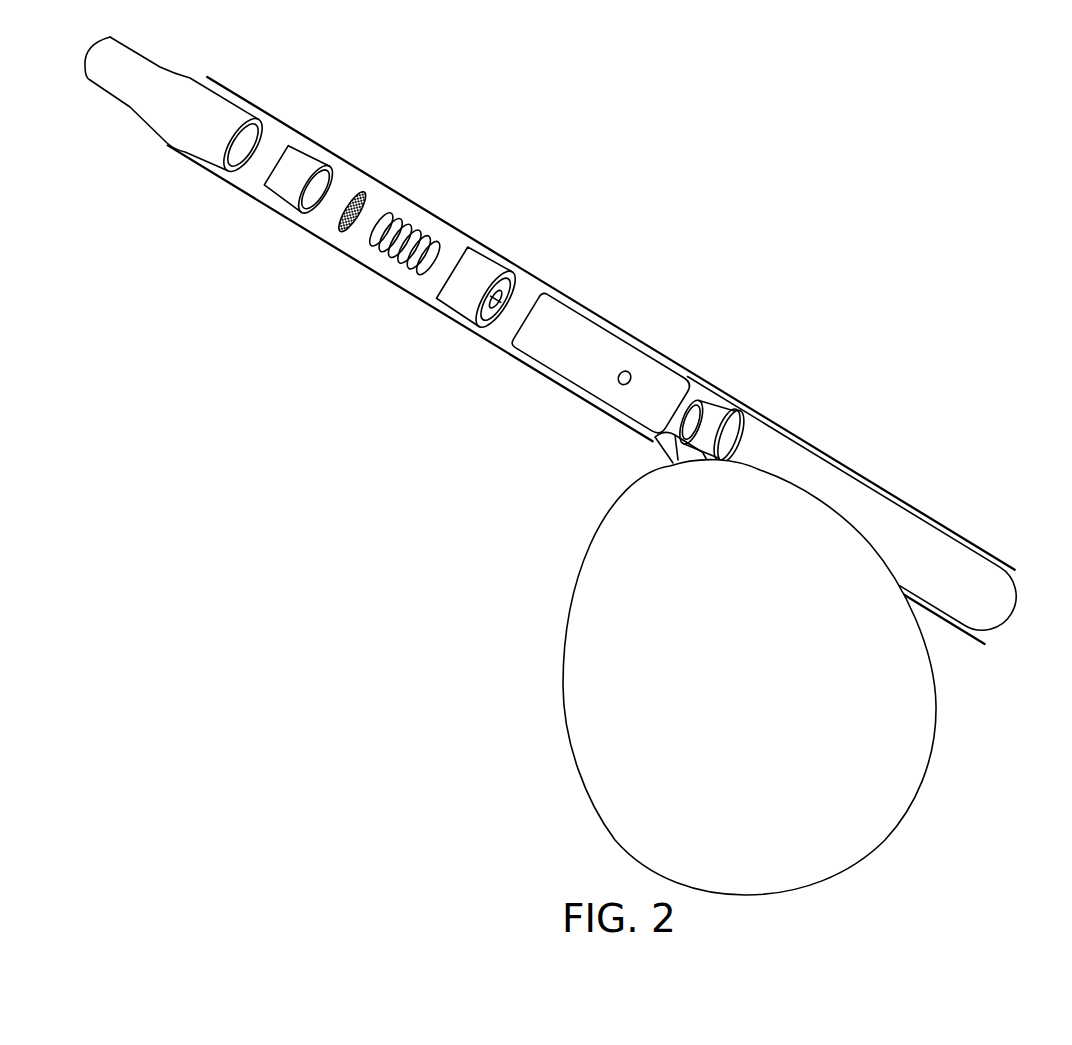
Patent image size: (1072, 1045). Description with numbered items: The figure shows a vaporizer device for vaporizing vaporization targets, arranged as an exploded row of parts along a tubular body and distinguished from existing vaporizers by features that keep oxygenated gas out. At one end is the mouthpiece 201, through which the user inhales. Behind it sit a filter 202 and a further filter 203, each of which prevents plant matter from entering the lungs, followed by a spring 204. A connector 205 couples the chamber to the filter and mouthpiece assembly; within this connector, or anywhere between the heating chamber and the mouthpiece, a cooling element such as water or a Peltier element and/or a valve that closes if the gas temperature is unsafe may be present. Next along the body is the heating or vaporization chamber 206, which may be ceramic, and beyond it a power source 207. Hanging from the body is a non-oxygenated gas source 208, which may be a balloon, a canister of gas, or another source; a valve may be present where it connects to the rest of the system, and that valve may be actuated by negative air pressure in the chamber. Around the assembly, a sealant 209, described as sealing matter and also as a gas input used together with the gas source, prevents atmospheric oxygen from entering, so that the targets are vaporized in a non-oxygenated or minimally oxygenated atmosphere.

The mouthpiece 201 is at (213, 95).
The filter 202 is at (340, 163).
The filter 203 is at (372, 212).
The spring 204 is at (399, 262).
The connector 205 is at (510, 262).
The heating or vaporization chamber 206 is at (628, 334).
The power source 207 is at (773, 423).
The non-oxygenated gas source 208 is at (927, 765).
The sealant 209 is at (603, 412).